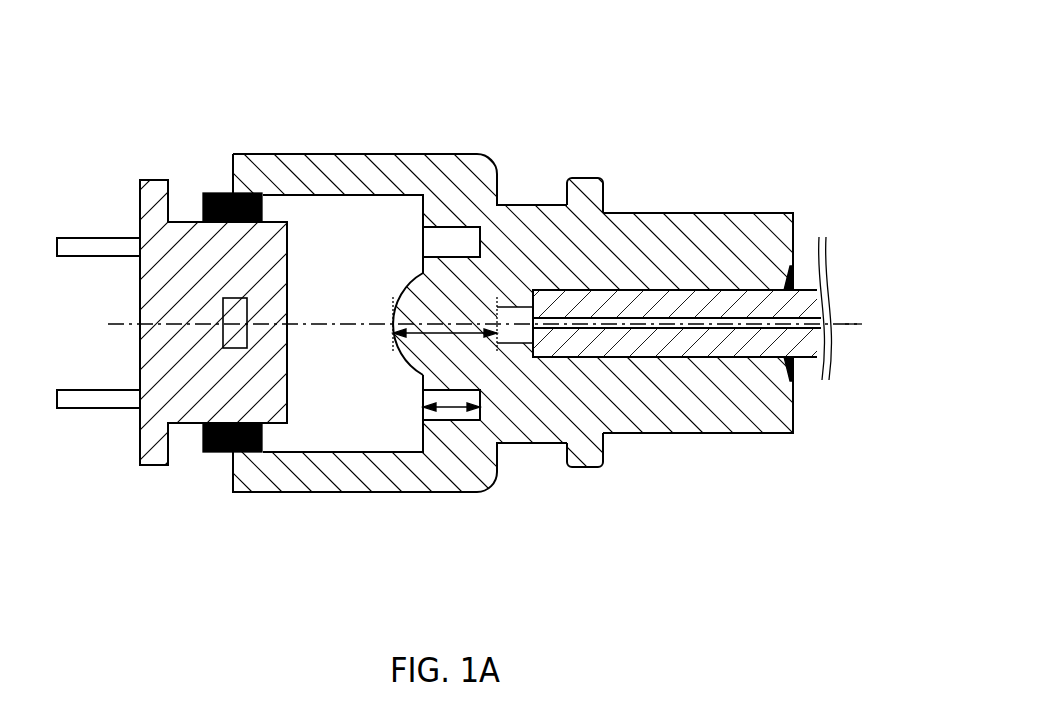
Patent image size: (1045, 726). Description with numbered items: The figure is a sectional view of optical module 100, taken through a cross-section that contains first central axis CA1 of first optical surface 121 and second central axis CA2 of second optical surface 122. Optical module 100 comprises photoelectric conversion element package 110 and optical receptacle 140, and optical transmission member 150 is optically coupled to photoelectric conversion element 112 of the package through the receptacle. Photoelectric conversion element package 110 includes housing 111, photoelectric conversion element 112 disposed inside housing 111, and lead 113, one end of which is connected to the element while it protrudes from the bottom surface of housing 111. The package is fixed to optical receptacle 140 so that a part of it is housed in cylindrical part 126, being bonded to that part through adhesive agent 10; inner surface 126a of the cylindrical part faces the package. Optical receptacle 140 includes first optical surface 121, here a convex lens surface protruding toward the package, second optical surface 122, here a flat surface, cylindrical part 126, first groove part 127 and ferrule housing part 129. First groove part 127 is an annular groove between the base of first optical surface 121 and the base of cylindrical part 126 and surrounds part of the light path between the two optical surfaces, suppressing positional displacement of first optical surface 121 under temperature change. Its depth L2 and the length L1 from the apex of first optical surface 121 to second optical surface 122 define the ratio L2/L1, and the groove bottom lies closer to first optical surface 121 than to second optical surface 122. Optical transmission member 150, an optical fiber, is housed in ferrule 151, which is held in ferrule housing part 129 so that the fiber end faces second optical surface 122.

The optical module 100 is at (522, 309).
The photoelectric conversion element package 110 is at (285, 309).
The housing 111 is at (190, 427).
The photoelectric conversion element 112 is at (237, 325).
The lead 113 is at (98, 400).
The adhesive agent 10 is at (218, 193).
The optical receptacle 140 is at (522, 310).
The cylindrical part 126 is at (522, 310).
The inner surface of the cylindrical part 126a is at (393, 183).
The first groove part 127 is at (450, 243).
The first optical surface 121 is at (395, 325).
The second optical surface 122 is at (497, 340).
The ferrule housing part 129 is at (603, 355).
The optical transmission member 150 is at (675, 381).
The ferrule 151 is at (750, 338).
The first central axis CA1 is at (452, 326).
The second central axis CA2 is at (889, 326).
The length L1 is at (535, 443).
The depth L2 is at (455, 407).